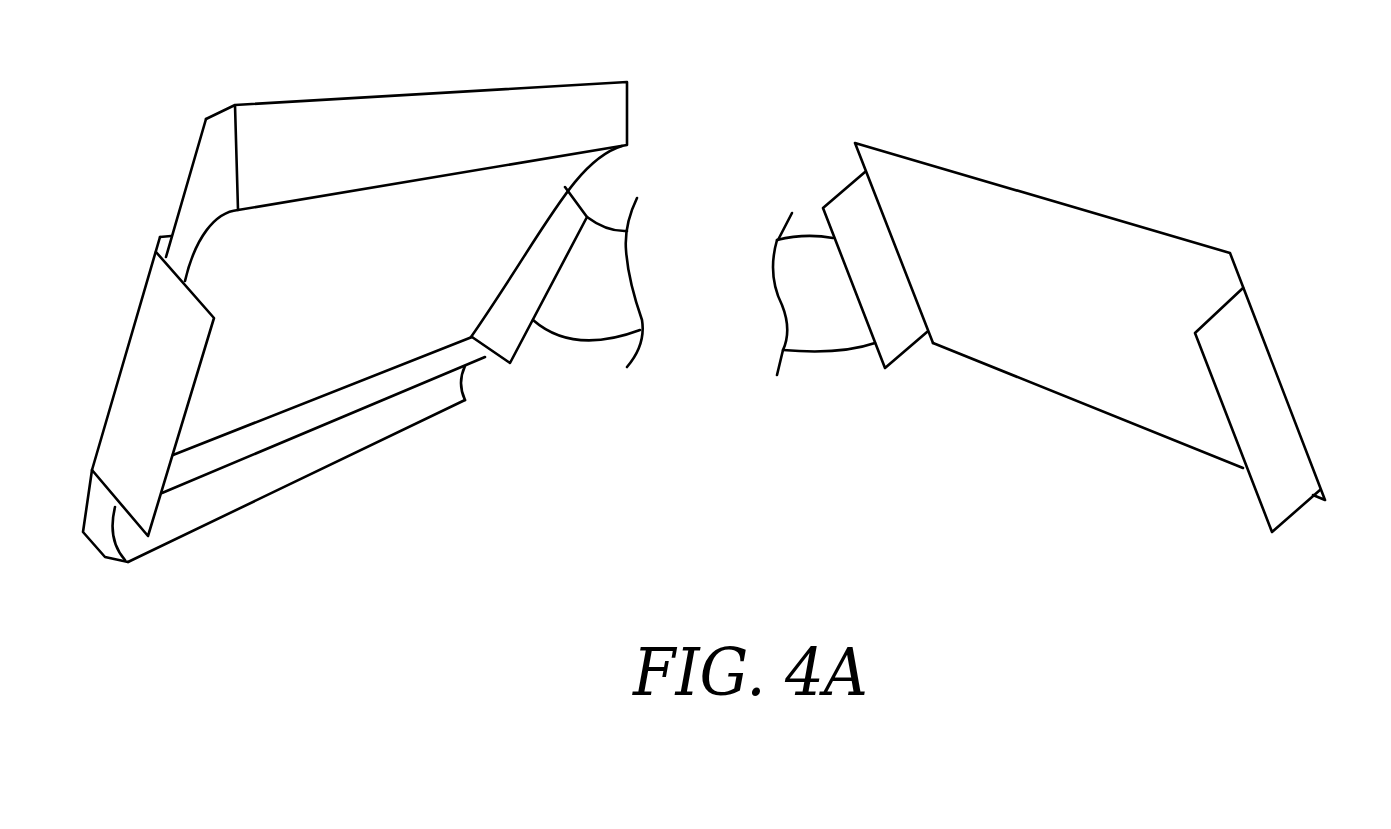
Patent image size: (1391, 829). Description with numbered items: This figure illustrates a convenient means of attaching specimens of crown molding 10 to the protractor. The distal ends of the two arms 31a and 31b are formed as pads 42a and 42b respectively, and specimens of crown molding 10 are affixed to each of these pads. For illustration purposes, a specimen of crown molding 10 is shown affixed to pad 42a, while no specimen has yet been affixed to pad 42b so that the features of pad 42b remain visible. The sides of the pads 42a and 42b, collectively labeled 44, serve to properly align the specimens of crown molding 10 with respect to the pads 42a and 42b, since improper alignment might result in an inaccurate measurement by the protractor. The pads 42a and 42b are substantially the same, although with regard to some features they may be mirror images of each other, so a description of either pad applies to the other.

The crown molding 10 is at (657, 97).
The pad 42a is at (114, 249).
The pad 42b is at (1054, 321).
The sides of pads 44 is at (138, 363).
The arm 31a is at (613, 222).
The arm 31b is at (772, 255).